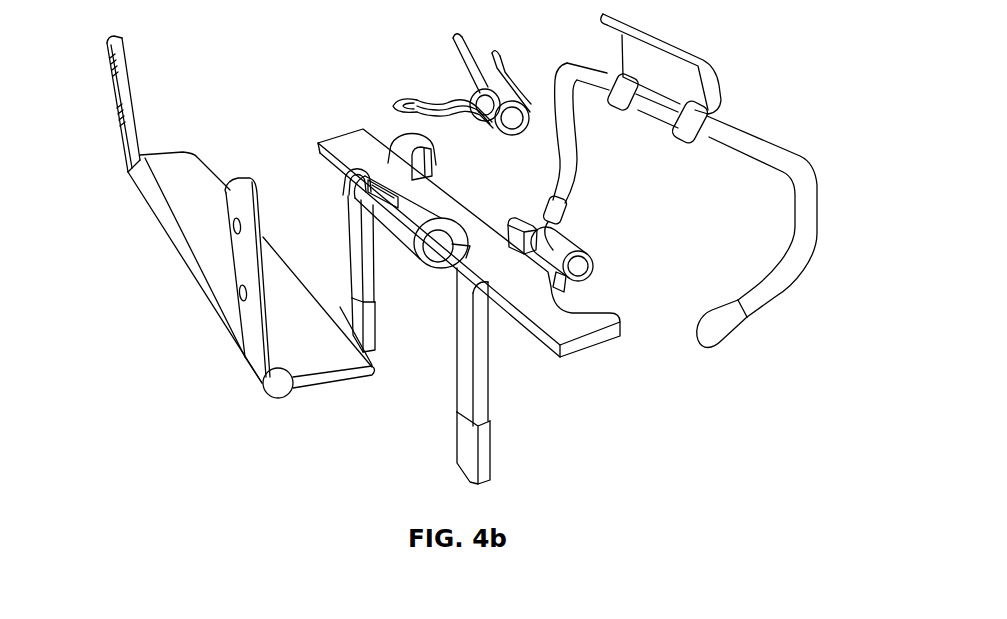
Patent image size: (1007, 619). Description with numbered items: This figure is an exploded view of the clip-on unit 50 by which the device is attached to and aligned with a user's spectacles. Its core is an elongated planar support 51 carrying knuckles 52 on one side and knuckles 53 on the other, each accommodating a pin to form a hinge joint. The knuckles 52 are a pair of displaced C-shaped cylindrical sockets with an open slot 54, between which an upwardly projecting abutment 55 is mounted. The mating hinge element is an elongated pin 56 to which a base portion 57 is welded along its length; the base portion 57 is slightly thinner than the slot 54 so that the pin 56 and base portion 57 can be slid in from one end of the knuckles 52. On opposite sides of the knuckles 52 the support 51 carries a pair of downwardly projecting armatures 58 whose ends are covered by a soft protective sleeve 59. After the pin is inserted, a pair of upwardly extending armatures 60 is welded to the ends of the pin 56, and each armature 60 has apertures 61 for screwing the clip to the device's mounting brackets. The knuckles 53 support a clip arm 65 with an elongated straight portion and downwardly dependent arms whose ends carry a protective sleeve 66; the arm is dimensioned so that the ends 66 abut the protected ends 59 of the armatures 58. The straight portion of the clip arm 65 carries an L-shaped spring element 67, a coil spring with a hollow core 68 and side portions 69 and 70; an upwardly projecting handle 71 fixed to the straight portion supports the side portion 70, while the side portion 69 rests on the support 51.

The clip-on unit 50 is at (620, 440).
The elongated planar support 51 is at (587, 345).
The knuckles 52 is at (402, 258).
The knuckles 53 is at (430, 137).
The open slot 54 is at (468, 247).
The abutment 55 is at (388, 193).
The elongated pin 56 is at (274, 392).
The base portion 57 is at (312, 382).
The armatures 58 is at (483, 362).
The protective sleeve 59 is at (377, 337).
The armatures 60 is at (118, 95).
The apertures 61 is at (240, 228).
The clip arm 65 is at (753, 138).
The protective sleeve 66 is at (718, 330).
The L-shaped spring element 67 is at (456, 80).
The hollow core 68 is at (515, 119).
The side portion 69 is at (393, 104).
The side portion 70 is at (503, 67).
The handle 71 is at (687, 45).